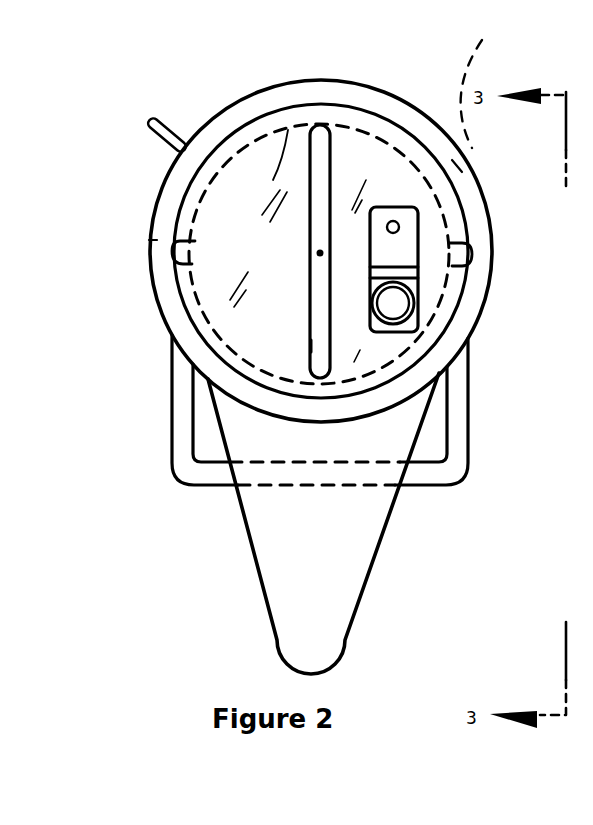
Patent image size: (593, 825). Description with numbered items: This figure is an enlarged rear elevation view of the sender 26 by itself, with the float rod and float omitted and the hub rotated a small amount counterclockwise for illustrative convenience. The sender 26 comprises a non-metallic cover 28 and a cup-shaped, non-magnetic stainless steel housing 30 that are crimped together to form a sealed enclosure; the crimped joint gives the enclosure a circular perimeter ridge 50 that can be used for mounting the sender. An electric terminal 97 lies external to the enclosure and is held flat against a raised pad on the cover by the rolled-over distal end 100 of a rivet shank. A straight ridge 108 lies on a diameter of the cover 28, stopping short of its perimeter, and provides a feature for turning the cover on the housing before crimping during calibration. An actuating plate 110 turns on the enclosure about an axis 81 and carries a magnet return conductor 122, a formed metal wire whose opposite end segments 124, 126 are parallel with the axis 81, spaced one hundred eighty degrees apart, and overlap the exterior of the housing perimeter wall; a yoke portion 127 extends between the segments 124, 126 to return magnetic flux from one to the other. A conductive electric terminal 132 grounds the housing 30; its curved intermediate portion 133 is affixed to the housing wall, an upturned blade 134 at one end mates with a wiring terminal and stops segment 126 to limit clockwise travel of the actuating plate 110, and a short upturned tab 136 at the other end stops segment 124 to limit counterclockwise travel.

The sender 26 is at (140, 309).
The cover 28 is at (290, 125).
The housing 30 is at (393, 98).
The circular perimeter ridge 50 is at (167, 198).
The axis 81 is at (320, 253).
The electric terminal 97 is at (418, 248).
The distal end of the rivet shank 100 is at (498, 387).
The straight ridge 108 is at (311, 347).
The actuating plate 110 is at (257, 563).
The magnet return conductor 122 is at (192, 485).
The end segment 124 is at (494, 281).
The end segment 126 is at (136, 238).
The yoke portion 127 is at (183, 423).
The conductive electric terminal 132 is at (162, 140).
The intermediate portion 133 is at (314, 128).
The upturned blade 134 is at (163, 142).
The upturned tab 136 is at (497, 94).